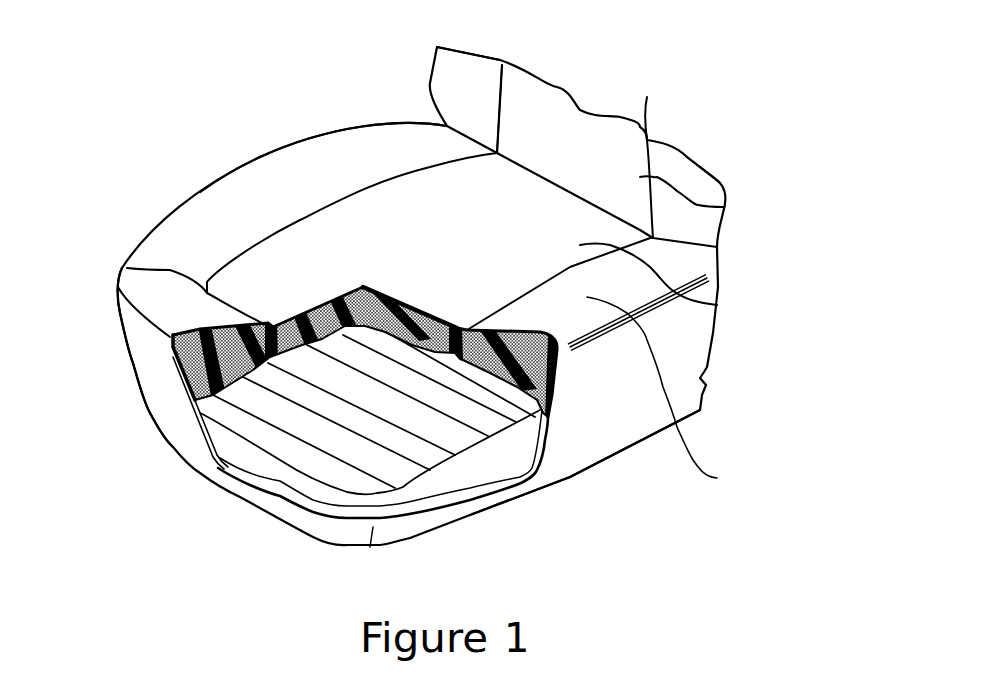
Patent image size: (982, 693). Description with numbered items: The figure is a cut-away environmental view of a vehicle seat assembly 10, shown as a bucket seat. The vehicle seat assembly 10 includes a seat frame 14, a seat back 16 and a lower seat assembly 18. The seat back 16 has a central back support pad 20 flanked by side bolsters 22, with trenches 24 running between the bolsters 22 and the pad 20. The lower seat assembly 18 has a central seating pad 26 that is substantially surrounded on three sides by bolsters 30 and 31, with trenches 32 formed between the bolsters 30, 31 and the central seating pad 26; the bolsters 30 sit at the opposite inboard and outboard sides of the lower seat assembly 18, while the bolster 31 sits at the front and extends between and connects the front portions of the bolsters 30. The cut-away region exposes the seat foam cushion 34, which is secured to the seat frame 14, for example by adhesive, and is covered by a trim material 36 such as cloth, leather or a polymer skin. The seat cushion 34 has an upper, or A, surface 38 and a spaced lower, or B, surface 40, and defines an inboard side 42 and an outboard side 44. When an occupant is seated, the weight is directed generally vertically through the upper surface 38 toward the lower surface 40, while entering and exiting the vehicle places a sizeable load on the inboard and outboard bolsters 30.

The vehicle seat assembly 10 is at (216, 134).
The seat frame 14 is at (476, 490).
The seat back 16 is at (688, 150).
The lower seat assembly 18 is at (713, 375).
The central back support pad 20 is at (718, 205).
The side bolsters 22 is at (451, 66).
The trenches 24 is at (503, 77).
The central seating pad 26 is at (667, 290).
The bolsters 30 is at (145, 250).
The bolster 31 is at (140, 287).
The trenches 32 is at (377, 180).
The seat foam cushion 34 is at (175, 373).
The trim material 36 is at (643, 417).
The upper surface 38 is at (318, 303).
The lower surface 40 is at (225, 383).
The inboard side 42 is at (667, 343).
The outboard side 44 is at (260, 158).